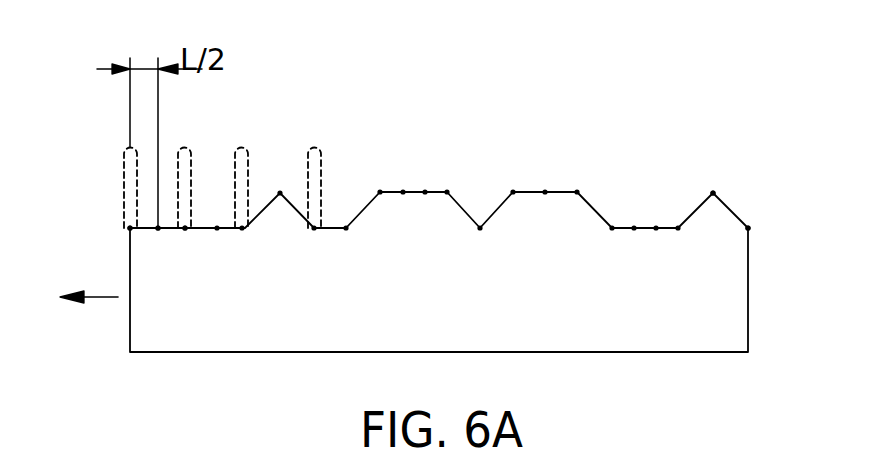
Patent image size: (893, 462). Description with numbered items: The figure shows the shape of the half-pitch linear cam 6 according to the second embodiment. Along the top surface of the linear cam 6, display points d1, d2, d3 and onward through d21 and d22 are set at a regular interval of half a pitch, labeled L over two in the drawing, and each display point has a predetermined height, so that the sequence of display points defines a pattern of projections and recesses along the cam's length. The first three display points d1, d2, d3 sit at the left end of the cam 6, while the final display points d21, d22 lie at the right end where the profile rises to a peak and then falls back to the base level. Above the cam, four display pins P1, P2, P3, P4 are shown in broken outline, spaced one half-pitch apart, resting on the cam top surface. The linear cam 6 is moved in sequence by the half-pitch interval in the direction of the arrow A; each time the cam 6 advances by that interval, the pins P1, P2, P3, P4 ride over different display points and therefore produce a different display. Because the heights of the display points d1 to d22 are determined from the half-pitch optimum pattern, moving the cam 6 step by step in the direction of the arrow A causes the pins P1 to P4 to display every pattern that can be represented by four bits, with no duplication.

The half-pitch linear cam 6 is at (718, 176).
The display pin P1 is at (123, 178).
The display pin P2 is at (192, 162).
The display pin P3 is at (248, 172).
The display pin P4 is at (322, 192).
The display point d1 is at (131, 231).
The display point d2 is at (159, 231).
The display point d3 is at (290, 280).
The display point d21 is at (713, 196).
The display point d22 is at (747, 231).
The arrow (direction of cam movement) A is at (89, 282).